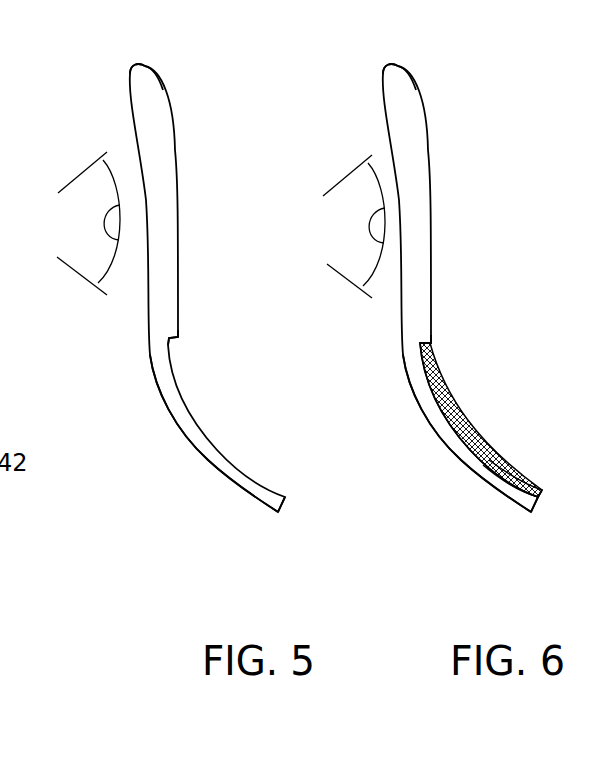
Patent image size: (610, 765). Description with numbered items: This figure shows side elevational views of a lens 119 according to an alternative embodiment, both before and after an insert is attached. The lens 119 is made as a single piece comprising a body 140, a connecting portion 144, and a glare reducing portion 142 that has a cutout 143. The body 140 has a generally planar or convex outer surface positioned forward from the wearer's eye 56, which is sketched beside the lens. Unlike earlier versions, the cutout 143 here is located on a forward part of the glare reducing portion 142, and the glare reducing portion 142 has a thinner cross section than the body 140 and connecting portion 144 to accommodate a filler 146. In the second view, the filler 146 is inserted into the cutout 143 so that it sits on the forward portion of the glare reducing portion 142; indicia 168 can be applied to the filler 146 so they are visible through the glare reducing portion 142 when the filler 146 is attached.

In FIG. 5, the lens 119 is at (157, 75).
In FIG. 6, the lens 119 is at (412, 80).
In FIG. 5, the body 140 is at (180, 148).
In FIG. 6, the body 140 is at (433, 153).
In FIG. 5, the glare reducing portion 142 is at (288, 506).
In FIG. 6, the glare reducing portion 142 is at (532, 515).
In FIG. 5, the cutout 143 is at (208, 437).
In FIG. 6, the cutout 143 is at (420, 343).
In FIG. 5, the connecting portion 144 is at (180, 332).
In FIG. 6, the connecting portion 144 is at (433, 335).
In FIG. 6, the filler 146 is at (472, 433).
In FIG. 6, the indicia 168 is at (518, 473).
In FIG. 5, the eye 56 is at (85, 268).
In FIG. 6, the eye 56 is at (348, 283).